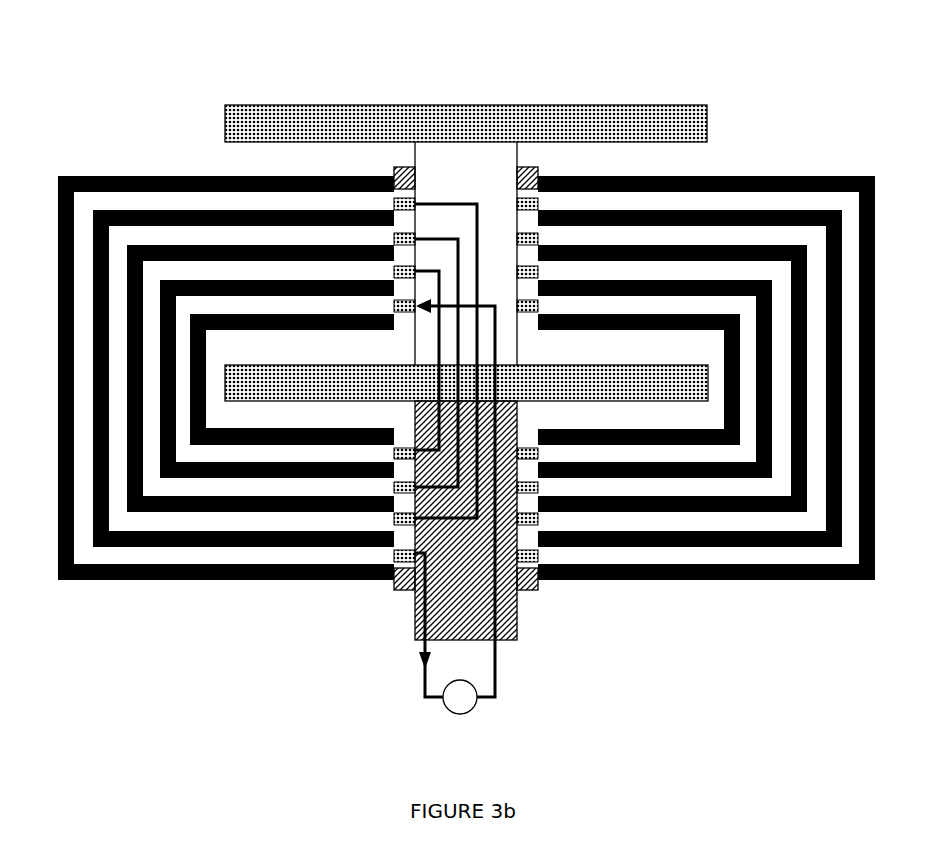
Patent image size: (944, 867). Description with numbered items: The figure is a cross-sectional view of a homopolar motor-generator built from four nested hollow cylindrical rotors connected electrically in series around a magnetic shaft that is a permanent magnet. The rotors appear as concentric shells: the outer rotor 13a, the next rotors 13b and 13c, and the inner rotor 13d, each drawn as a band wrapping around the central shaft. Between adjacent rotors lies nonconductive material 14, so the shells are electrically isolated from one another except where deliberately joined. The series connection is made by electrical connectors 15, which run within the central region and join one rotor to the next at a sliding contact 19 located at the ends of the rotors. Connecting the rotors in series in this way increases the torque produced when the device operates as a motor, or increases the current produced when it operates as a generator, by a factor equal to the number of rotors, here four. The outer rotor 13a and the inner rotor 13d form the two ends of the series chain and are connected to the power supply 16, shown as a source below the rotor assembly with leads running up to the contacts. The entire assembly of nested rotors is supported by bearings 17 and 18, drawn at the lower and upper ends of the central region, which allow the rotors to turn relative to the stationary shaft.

The outer rotor 13a is at (82, 223).
The hollow rotor 13b is at (118, 258).
The hollow rotor 13c is at (150, 313).
The inner rotor 13d is at (183, 353).
The nonconductive material 14 is at (740, 315).
The electrical connectors 15 is at (447, 203).
The power supply 16 is at (472, 713).
The bearing 17 is at (392, 592).
The bearing 18 is at (393, 172).
The sliding contact 19 is at (533, 203).